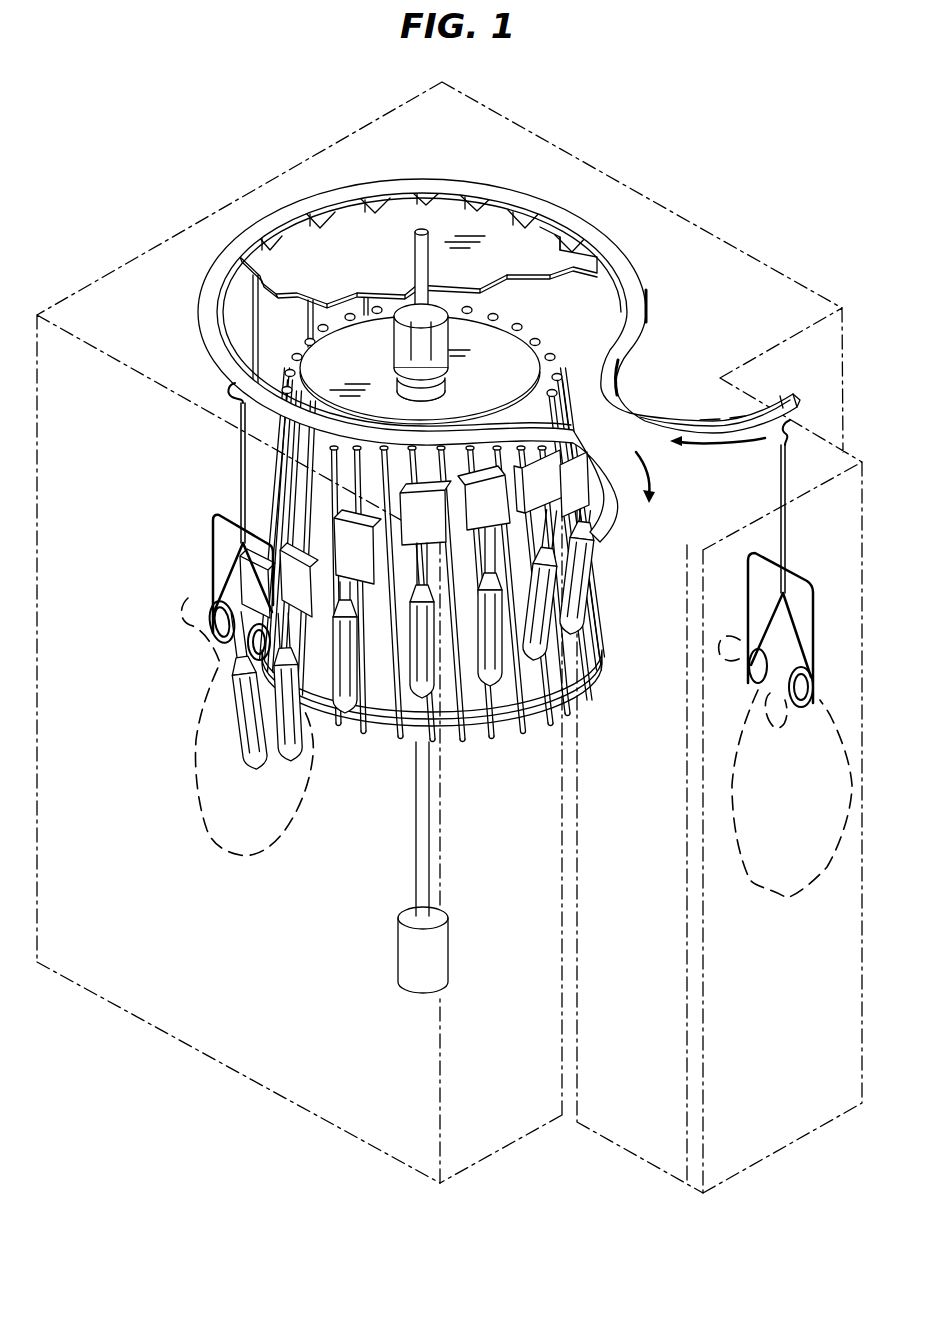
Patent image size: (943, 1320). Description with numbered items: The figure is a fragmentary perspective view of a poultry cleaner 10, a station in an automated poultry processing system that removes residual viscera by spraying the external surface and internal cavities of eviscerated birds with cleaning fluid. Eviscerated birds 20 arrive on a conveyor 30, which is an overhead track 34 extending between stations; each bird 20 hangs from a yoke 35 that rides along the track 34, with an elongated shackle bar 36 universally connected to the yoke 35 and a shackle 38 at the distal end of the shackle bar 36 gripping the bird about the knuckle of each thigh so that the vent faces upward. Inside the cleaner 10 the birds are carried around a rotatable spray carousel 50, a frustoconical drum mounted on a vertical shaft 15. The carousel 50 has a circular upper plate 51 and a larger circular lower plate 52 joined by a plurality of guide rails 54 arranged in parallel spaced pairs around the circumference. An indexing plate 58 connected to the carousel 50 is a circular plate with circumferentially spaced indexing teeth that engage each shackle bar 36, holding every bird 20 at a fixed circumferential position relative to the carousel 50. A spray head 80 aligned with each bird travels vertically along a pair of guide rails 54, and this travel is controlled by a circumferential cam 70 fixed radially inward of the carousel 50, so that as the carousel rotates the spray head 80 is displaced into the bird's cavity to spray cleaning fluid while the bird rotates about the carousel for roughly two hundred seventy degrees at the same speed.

The poultry cleaner 10 is at (297, 168).
The shaft 15 is at (415, 888).
The bird 20 is at (283, 835).
The conveyor 30 is at (203, 283).
The overhead track 34 is at (220, 342).
The yoke 35 is at (228, 390).
The shackle bar 36 is at (240, 505).
The shackle 38 is at (210, 645).
The spray carousel 50 is at (256, 461).
The upper plate 51 is at (501, 391).
The lower plate 52 is at (455, 742).
The guide rails 54 is at (503, 742).
The indexing plate 58 is at (385, 266).
The circumferential cam 70 is at (400, 568).
The spray head 80 is at (294, 752).